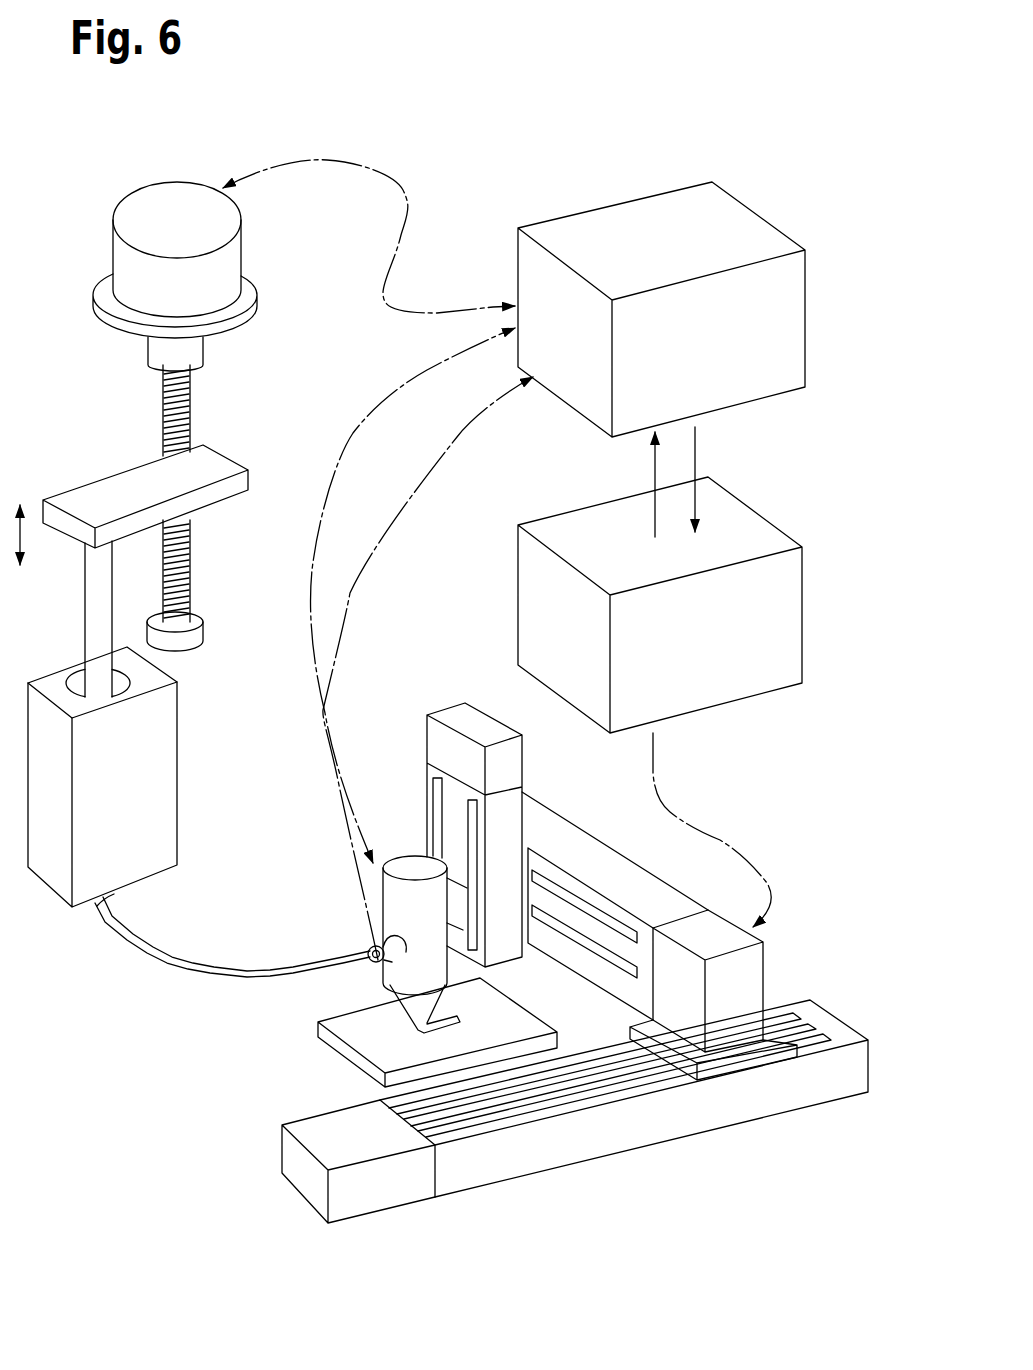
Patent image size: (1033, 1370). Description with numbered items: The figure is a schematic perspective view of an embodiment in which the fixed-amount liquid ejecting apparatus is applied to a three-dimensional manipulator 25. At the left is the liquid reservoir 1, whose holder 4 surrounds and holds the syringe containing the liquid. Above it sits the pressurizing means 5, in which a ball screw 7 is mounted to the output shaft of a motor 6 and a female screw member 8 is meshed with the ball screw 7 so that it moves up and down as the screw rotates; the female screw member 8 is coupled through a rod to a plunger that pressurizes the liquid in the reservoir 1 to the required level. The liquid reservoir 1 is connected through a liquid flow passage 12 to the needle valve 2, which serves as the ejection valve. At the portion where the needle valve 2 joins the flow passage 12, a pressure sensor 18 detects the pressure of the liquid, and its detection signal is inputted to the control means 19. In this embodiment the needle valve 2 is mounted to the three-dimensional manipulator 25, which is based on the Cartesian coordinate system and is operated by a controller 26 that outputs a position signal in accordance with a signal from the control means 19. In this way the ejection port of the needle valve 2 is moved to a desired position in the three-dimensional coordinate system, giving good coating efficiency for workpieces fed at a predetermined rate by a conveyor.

The liquid reservoir 1 is at (182, 778).
The needle valve 2 is at (406, 852).
The holder 4 is at (160, 843).
The pressurizing means 5 is at (138, 358).
The motor 6 is at (167, 208).
The ball screw 7 is at (190, 563).
The female screw member 8 is at (100, 495).
The liquid flow passage 12 is at (163, 965).
The pressure sensor 18 is at (393, 968).
The control means 19 is at (590, 240).
The three-dimensional manipulator 25 is at (689, 886).
The controller 26 is at (745, 537).